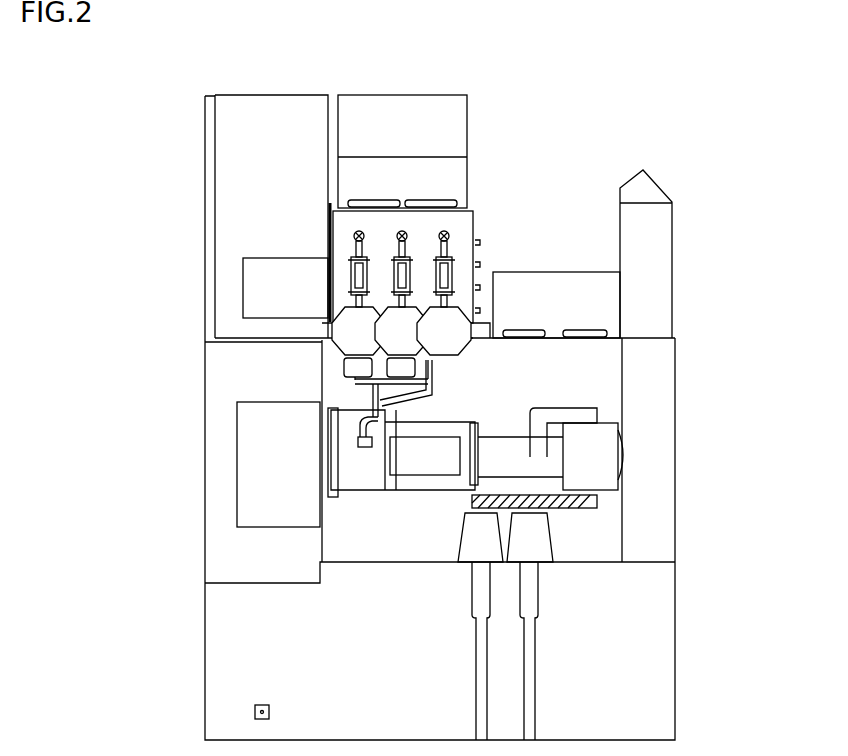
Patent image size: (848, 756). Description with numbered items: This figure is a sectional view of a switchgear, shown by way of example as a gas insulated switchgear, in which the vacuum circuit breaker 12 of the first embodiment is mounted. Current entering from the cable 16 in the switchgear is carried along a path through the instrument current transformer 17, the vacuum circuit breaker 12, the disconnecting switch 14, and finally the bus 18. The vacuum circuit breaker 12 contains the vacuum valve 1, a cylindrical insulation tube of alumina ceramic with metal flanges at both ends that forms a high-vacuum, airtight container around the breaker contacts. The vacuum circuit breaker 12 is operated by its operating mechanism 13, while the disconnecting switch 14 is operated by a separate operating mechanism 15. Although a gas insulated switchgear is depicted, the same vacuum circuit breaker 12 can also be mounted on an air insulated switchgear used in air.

The vacuum valve 1 is at (433, 422).
The vacuum circuit breaker 12 is at (383, 458).
The operating mechanism of the vacuum circuit breaker 13 is at (252, 493).
The disconnecting switch 14 is at (356, 279).
The operating mechanism of the disconnecting switch 15 is at (260, 295).
The cable 16 is at (532, 592).
The instrument current transformer 17 is at (592, 457).
The bus 18 is at (355, 236).